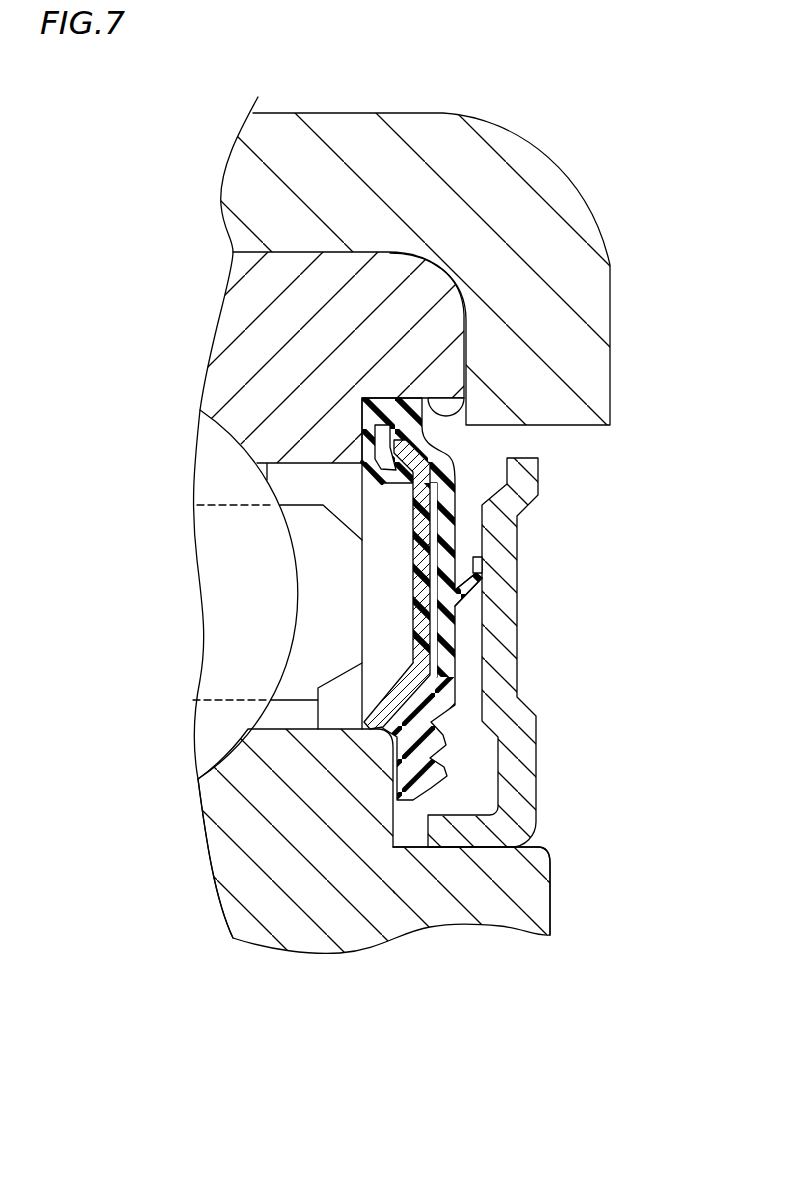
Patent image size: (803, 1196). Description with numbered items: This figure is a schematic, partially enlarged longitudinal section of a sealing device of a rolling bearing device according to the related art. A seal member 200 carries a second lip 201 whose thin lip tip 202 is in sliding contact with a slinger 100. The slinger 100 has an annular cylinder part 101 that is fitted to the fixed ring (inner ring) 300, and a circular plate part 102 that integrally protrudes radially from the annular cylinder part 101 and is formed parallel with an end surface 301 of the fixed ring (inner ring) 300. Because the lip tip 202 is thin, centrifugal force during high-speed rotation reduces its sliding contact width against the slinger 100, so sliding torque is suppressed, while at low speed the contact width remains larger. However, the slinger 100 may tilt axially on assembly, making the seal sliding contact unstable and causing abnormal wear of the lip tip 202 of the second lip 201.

The slinger 100 is at (518, 533).
The annular cylinder part 101 is at (457, 832).
The circular plate part 102 is at (535, 755).
The seal member 200 is at (494, 599).
The second lip 201 is at (483, 606).
The lip tip 202 is at (483, 573).
The fixed ring (inner ring) 300 is at (345, 932).
The end surface 301 is at (548, 905).